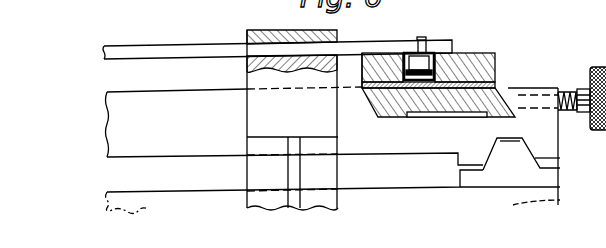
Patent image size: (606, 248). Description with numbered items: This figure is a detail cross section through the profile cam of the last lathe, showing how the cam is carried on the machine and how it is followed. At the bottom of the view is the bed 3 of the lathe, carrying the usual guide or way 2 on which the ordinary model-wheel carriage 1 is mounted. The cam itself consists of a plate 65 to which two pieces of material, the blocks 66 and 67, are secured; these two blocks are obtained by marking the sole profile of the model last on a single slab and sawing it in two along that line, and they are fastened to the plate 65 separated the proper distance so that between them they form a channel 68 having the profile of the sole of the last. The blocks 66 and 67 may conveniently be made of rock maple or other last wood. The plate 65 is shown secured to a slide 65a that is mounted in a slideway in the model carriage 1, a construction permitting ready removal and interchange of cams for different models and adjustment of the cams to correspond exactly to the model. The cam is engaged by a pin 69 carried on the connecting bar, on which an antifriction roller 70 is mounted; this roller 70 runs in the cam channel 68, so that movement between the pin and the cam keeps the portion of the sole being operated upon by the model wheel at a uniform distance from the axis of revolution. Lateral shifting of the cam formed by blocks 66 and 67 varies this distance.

The model-wheel carriage 1 is at (550, 139).
The guide or way 2 is at (521, 155).
The bed 3 is at (558, 202).
The plate 65 is at (413, 76).
The slide 65a is at (512, 100).
The block 66 is at (373, 72).
The block 67 is at (495, 66).
The cam channel 68 is at (434, 112).
The pin 69 is at (421, 40).
The antifriction roller 70 is at (448, 68).